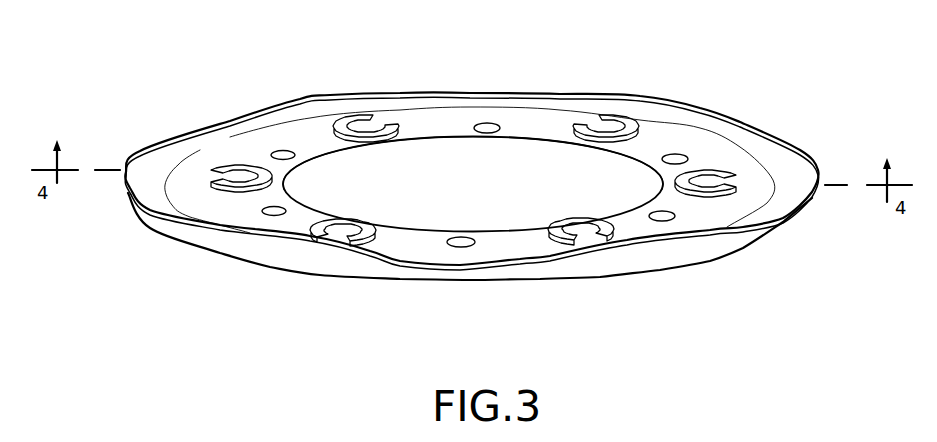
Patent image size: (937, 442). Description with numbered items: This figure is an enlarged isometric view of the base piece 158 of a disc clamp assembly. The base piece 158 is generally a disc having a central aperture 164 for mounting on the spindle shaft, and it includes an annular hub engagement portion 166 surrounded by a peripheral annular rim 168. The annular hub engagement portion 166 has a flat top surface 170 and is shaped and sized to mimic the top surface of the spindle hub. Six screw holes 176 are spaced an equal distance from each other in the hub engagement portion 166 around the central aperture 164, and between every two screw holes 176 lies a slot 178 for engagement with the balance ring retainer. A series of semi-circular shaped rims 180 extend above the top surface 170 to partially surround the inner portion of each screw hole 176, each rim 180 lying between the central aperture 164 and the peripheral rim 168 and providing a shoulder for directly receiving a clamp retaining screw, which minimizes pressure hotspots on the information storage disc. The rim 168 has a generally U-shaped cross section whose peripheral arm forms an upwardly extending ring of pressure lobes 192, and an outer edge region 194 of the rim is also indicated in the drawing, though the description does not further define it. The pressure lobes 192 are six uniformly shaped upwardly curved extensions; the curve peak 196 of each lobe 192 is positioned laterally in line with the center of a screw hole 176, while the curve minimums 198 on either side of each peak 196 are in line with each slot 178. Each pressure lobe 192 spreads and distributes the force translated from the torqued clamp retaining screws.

The base piece 158 is at (735, 132).
The central aperture 164 is at (508, 155).
The annular hub engagement portion 166 is at (733, 236).
The peripheral annular rim 168 is at (525, 244).
The top surface 170 is at (409, 249).
The screw holes 176 is at (213, 178).
The slot 178 is at (282, 152).
The semi-circular shaped rims 180 is at (577, 130).
The pressure lobes 192 is at (700, 256).
The outer edge 194 is at (787, 230).
The curve peak 196 is at (686, 100).
The curve minimums 198 is at (488, 98).